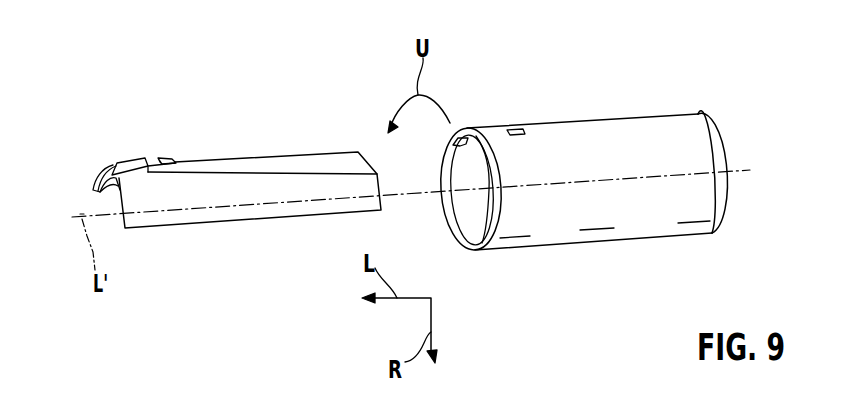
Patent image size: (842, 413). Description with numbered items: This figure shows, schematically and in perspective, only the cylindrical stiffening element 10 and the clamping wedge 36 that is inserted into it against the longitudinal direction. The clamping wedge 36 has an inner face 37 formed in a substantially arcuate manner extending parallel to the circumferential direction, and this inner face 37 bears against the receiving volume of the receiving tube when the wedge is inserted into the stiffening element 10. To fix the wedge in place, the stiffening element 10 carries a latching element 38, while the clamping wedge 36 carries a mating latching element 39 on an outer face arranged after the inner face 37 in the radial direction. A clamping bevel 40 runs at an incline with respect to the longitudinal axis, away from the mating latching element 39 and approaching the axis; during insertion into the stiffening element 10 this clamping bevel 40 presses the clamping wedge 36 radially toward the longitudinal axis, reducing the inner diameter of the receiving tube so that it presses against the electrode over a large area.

The stiffening element 10 is at (575, 126).
The clamping wedge 36 is at (237, 212).
The inner face 37 is at (95, 193).
The latching element 38 is at (515, 113).
The mating latching element 39 is at (148, 143).
The clamping bevel 40 is at (320, 164).